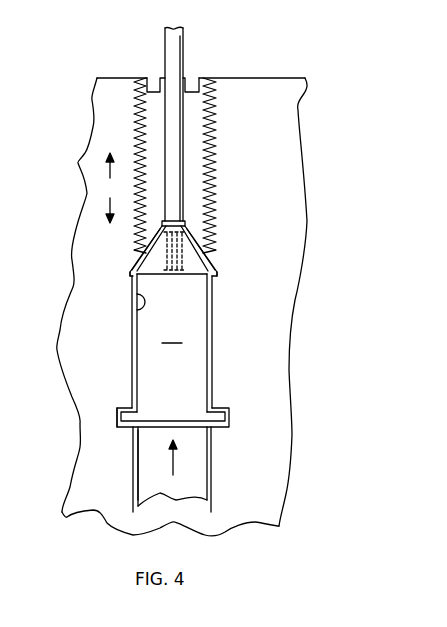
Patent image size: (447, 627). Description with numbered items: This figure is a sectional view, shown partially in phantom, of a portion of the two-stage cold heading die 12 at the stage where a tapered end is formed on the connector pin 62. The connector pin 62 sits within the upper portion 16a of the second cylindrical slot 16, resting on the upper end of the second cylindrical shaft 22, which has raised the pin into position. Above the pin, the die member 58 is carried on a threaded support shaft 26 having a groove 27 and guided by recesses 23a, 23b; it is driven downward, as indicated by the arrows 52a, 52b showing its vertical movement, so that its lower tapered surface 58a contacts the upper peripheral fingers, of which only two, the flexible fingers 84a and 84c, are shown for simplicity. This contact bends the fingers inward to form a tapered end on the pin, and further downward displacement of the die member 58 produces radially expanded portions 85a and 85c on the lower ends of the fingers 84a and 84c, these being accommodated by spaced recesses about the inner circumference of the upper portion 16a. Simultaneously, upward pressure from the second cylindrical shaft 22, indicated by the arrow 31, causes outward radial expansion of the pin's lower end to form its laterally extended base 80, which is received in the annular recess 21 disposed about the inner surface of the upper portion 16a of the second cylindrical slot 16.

The fluid dispensing device 12 is at (110, 63).
The second cylindrical slot 16 is at (137, 333).
The upper portion of the second cylindrical slot 16a is at (136, 288).
The annular recess 21 is at (120, 408).
The second cylindrical shaft 22 is at (190, 452).
The recess 23a is at (153, 78).
The recess 23b is at (193, 78).
The threaded rod 26 is at (193, 158).
The rod groove 27 is at (164, 138).
The flow arrow 31 is at (178, 458).
The downward movement arrow 52a is at (105, 205).
The upward movement arrow 52b is at (105, 172).
The die member 58 is at (196, 231).
The lower tapered surface 58a is at (183, 243).
The connector pin 62 is at (173, 334).
The laterally extended base 80 is at (210, 415).
The flexible finger 84a is at (138, 256).
The flexible finger 84c is at (190, 258).
The radially expanded portion 85a is at (128, 271).
The radially expanded portion 85c is at (214, 272).